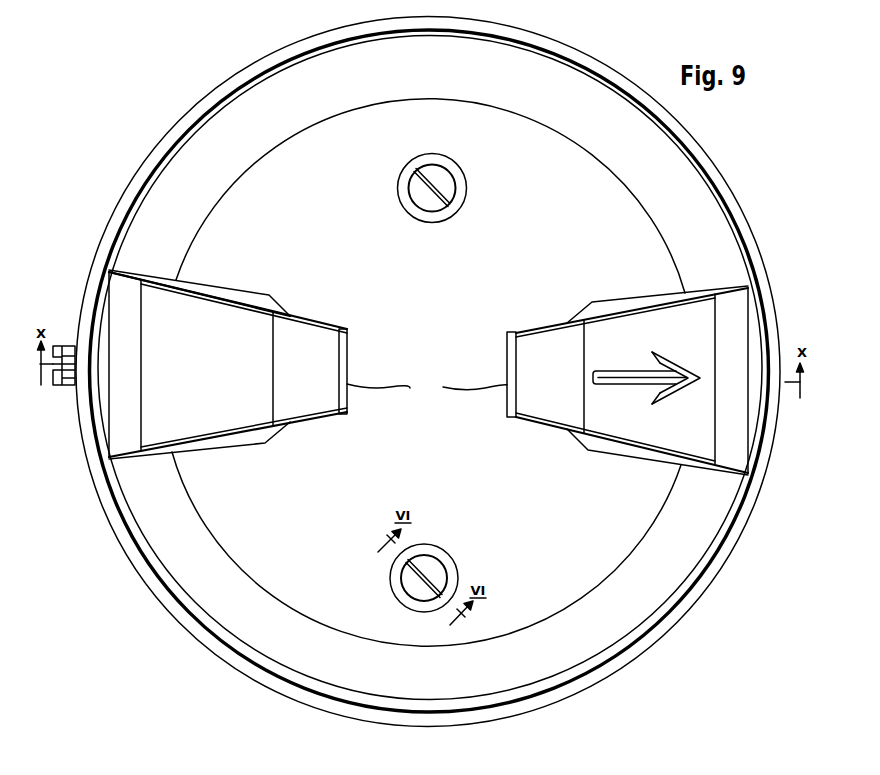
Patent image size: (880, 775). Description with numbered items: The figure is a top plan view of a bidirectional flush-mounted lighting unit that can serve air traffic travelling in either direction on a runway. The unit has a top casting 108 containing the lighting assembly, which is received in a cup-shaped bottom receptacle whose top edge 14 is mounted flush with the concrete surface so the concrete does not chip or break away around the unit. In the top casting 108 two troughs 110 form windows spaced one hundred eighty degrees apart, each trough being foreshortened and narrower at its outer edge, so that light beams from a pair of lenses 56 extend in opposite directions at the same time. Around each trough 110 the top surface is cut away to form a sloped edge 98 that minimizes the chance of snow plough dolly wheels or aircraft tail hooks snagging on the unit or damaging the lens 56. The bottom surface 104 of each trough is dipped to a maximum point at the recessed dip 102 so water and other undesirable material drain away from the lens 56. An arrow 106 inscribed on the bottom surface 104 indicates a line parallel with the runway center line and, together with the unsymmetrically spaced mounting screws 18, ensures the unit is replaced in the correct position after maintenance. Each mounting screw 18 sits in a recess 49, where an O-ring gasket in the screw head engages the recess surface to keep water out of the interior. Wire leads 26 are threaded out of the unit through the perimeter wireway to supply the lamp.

The top edge 14 is at (672, 616).
The mounting screws 18 is at (438, 573).
The wire leads 26 is at (62, 377).
The recess 49 is at (411, 212).
The lens 56 is at (427, 387).
The sloped edge 98 is at (622, 302).
The recessed dip 102 is at (585, 353).
The bottom surface of the trough 104 is at (190, 307).
The arrow 106 is at (635, 379).
The top casting 108 is at (257, 98).
The troughs 110 is at (672, 443).